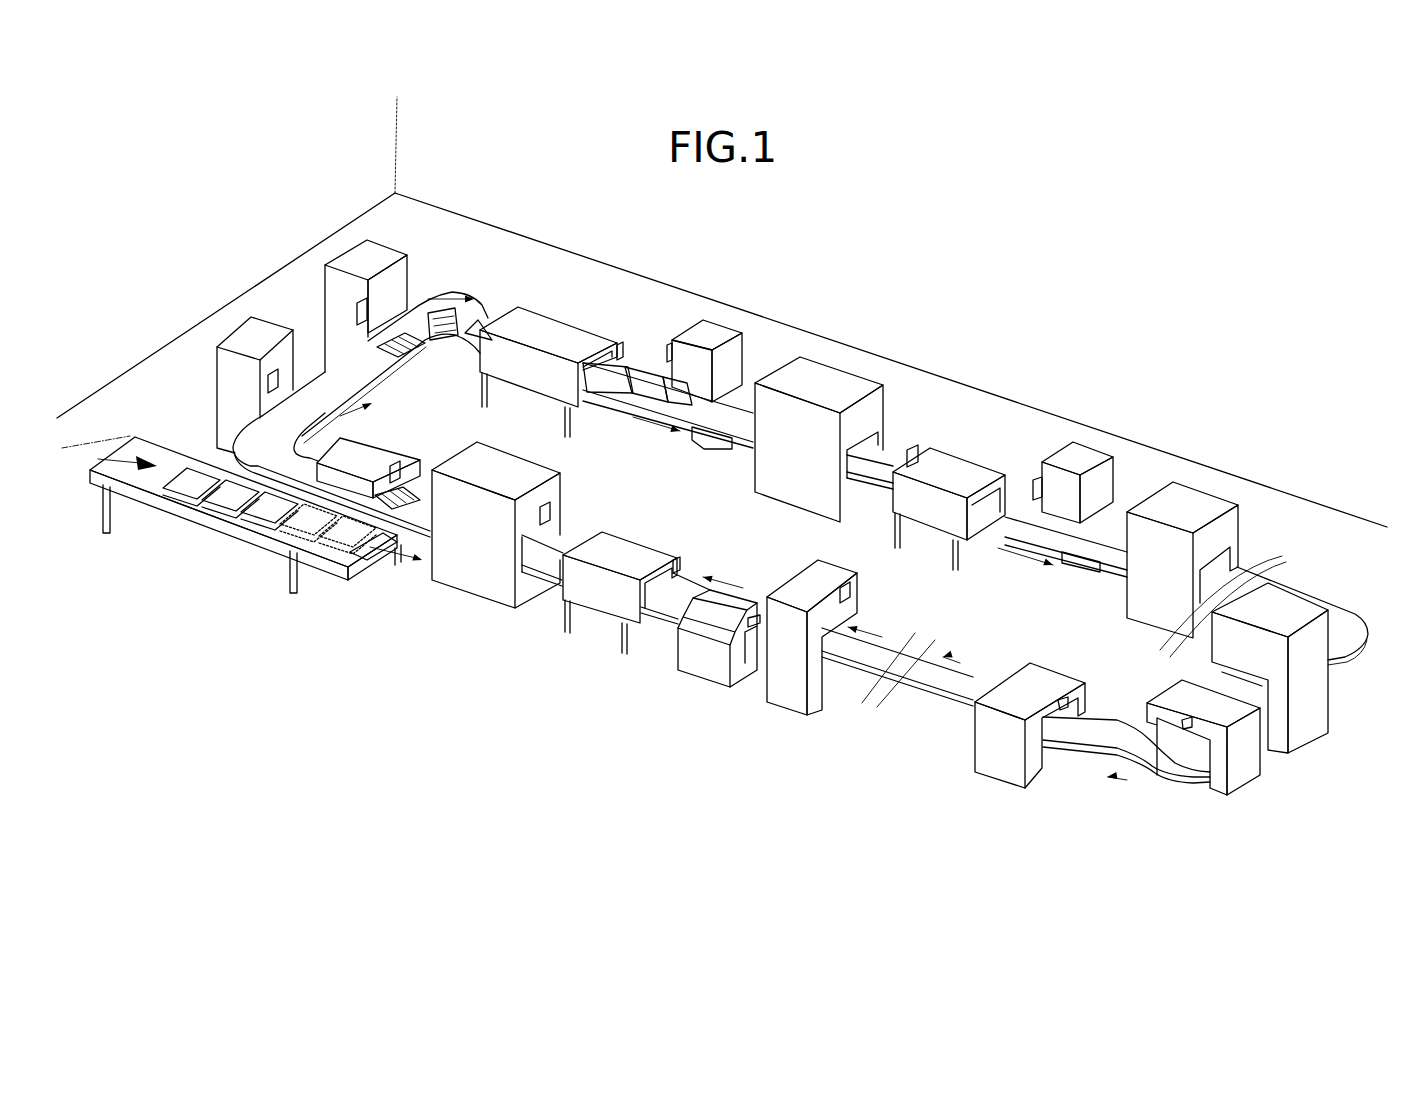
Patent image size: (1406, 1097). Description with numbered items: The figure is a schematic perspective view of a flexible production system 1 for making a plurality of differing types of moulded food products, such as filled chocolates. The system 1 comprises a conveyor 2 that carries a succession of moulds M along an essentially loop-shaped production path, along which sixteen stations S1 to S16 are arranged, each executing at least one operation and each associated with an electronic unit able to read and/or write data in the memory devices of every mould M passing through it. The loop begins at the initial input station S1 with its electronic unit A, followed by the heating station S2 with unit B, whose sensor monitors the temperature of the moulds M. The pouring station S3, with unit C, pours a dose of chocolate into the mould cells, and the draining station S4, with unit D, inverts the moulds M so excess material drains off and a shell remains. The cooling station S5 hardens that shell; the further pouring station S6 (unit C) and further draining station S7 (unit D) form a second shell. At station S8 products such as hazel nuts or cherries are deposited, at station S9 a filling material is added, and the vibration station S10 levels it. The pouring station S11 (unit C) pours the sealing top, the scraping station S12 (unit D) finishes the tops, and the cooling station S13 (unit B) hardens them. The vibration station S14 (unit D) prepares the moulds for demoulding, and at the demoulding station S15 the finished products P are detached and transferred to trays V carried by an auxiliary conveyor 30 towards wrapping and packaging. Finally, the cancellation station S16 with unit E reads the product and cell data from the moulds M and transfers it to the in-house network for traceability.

The system 1 is at (1108, 284).
The conveyor 2 is at (318, 397).
The auxiliary conveyor 30 is at (153, 476).
The trays V is at (335, 540).
The products P is at (368, 558).
The moulds M is at (462, 325).
The electronic unit A is at (357, 305).
The electronic unit B is at (620, 346).
The electronic unit C is at (669, 352).
The electronic unit D is at (397, 466).
The electronic unit E is at (268, 378).
The initial input station S1 is at (365, 262).
The heating station S2 is at (543, 330).
The pouring station S3 is at (710, 335).
The draining station S4 is at (820, 385).
The cooling station S5 is at (940, 462).
The further pouring station S6 is at (1080, 455).
The further draining station S7 is at (1180, 500).
The depositing station S8 is at (1273, 612).
The filling station S9 is at (1230, 700).
The vibration station S10 is at (1010, 690).
The pouring station S11 is at (790, 600).
The scraping station S12 is at (700, 617).
The cooling station S13 is at (600, 565).
The vibration station S14 is at (470, 478).
The demoulding station S15 is at (340, 453).
The final cancellation station S16 is at (250, 337).